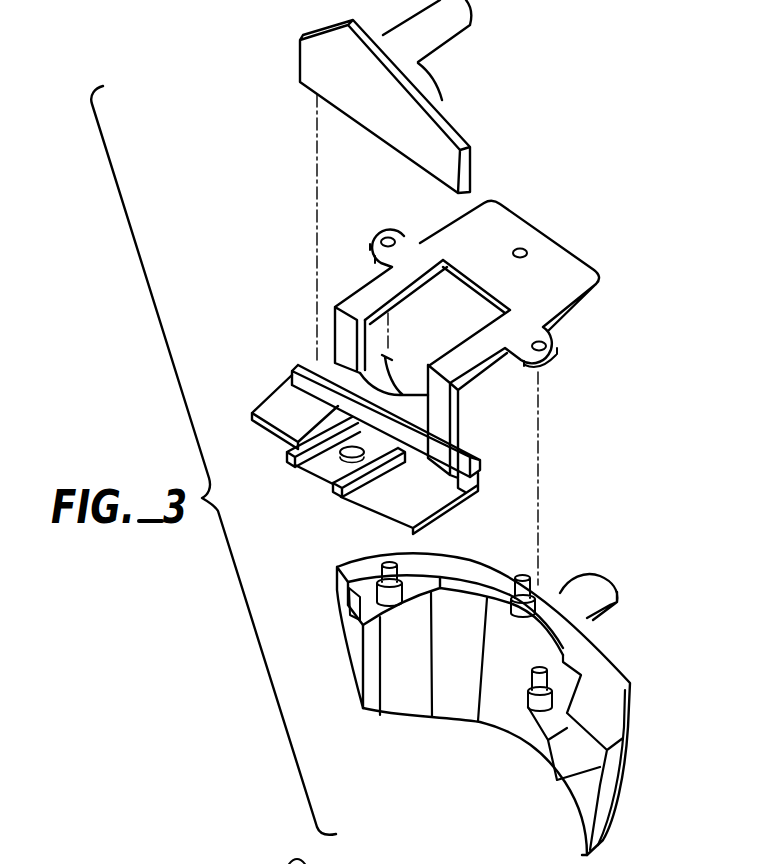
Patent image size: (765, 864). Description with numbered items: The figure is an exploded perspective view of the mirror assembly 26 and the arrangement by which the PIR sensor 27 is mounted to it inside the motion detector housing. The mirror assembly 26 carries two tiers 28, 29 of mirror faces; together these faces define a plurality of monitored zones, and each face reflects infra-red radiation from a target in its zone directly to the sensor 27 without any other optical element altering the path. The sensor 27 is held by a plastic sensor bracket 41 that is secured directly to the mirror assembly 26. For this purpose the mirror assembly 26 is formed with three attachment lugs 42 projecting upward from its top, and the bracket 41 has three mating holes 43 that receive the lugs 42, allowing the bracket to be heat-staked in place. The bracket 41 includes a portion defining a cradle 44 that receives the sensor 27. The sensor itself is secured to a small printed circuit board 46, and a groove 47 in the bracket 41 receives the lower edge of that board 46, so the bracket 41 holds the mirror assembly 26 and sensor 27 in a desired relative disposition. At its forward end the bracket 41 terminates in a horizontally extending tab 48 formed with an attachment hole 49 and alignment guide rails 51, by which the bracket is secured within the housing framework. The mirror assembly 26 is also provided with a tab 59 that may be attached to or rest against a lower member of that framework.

The mirror assembly 26 is at (626, 655).
The PIR sensor 27 is at (437, 78).
The tier of mirror faces 28 is at (373, 687).
The tier of mirror faces 29 is at (348, 604).
The sensor bracket 41 is at (566, 279).
The attachment lugs 42 is at (388, 563).
The mating holes 43 is at (388, 235).
The cradle 44 is at (400, 407).
The printed circuit board 46 is at (310, 57).
The groove 47 is at (310, 370).
The tab 48 is at (282, 407).
The attachment hole 49 is at (343, 457).
The alignment guide rails 51 is at (285, 463).
The tab 59 is at (595, 583).